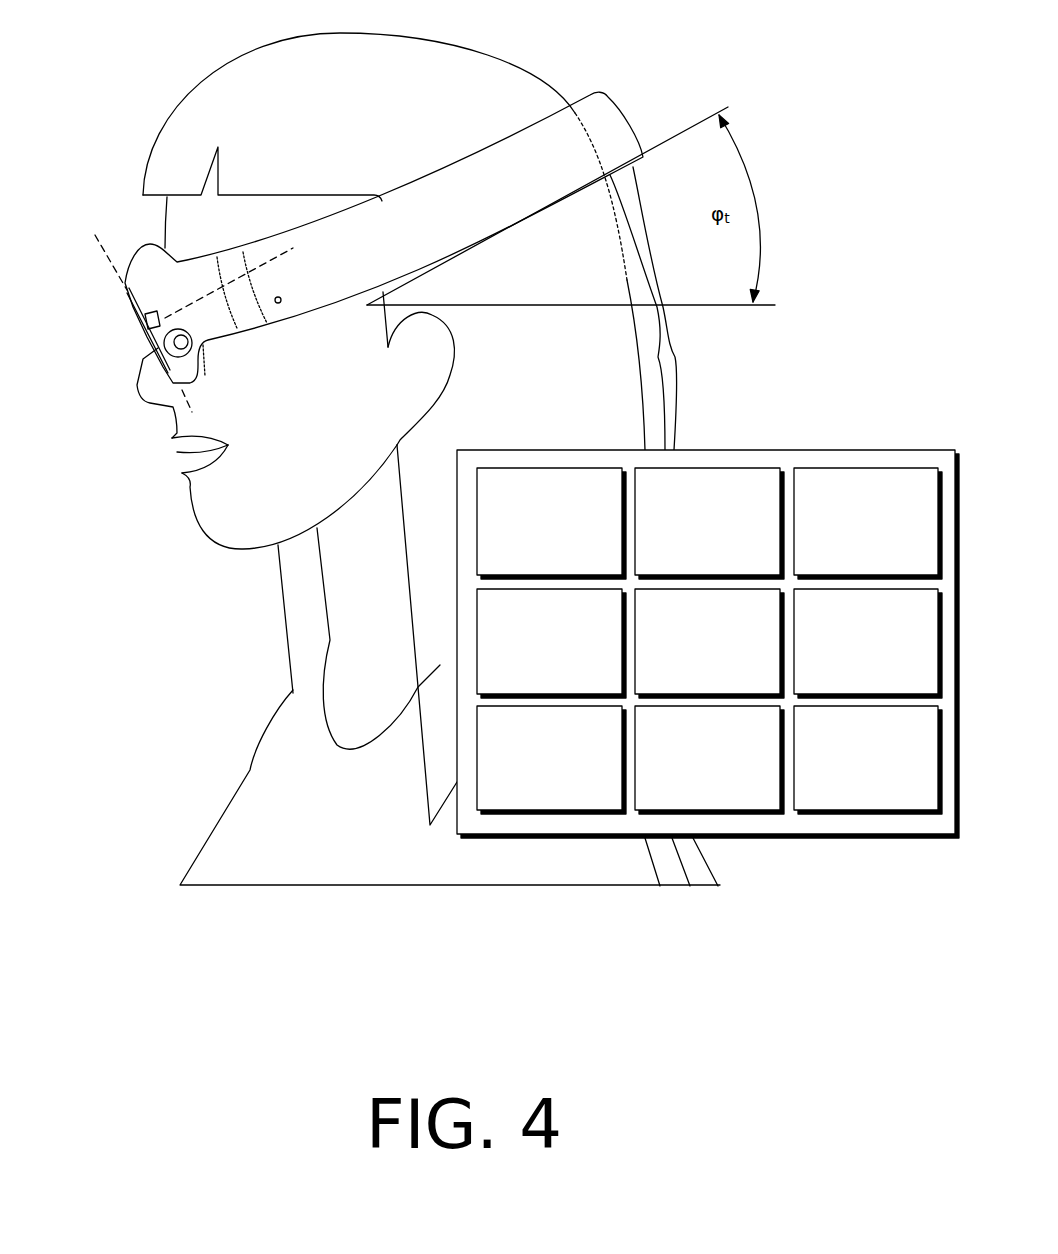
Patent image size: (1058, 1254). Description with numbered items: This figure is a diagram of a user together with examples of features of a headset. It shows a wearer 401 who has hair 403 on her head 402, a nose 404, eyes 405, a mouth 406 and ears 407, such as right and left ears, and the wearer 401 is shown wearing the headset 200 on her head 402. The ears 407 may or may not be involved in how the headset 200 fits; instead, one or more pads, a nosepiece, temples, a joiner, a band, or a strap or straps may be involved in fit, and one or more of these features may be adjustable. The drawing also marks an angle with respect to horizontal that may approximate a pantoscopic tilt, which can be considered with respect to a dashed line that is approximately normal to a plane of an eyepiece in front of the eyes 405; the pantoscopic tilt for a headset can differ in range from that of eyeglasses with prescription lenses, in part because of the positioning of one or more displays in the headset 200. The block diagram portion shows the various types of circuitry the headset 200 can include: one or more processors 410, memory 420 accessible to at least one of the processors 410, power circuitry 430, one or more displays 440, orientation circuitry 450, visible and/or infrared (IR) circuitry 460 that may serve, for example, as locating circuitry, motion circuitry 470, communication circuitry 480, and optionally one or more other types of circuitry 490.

The wearer 401 is at (190, 57).
The head 402 is at (490, 75).
The hair 403 is at (402, 121).
The headset 200 is at (122, 222).
The eyes 405 is at (113, 318).
The nose 404 is at (131, 362).
The mouth 406 is at (166, 461).
The ears 407 is at (384, 393).
The processors 410 is at (532, 547).
The memory 420 is at (690, 547).
The power circuitry 430 is at (849, 561).
The displays 440 is at (532, 665).
The orientation circuitry 450 is at (690, 681).
The visible and/or infrared (IR) circuitry 460 is at (849, 681).
The motion circuitry 470 is at (532, 798).
The communication circuitry 480 is at (690, 798).
The other types of circuitry 490 is at (849, 784).